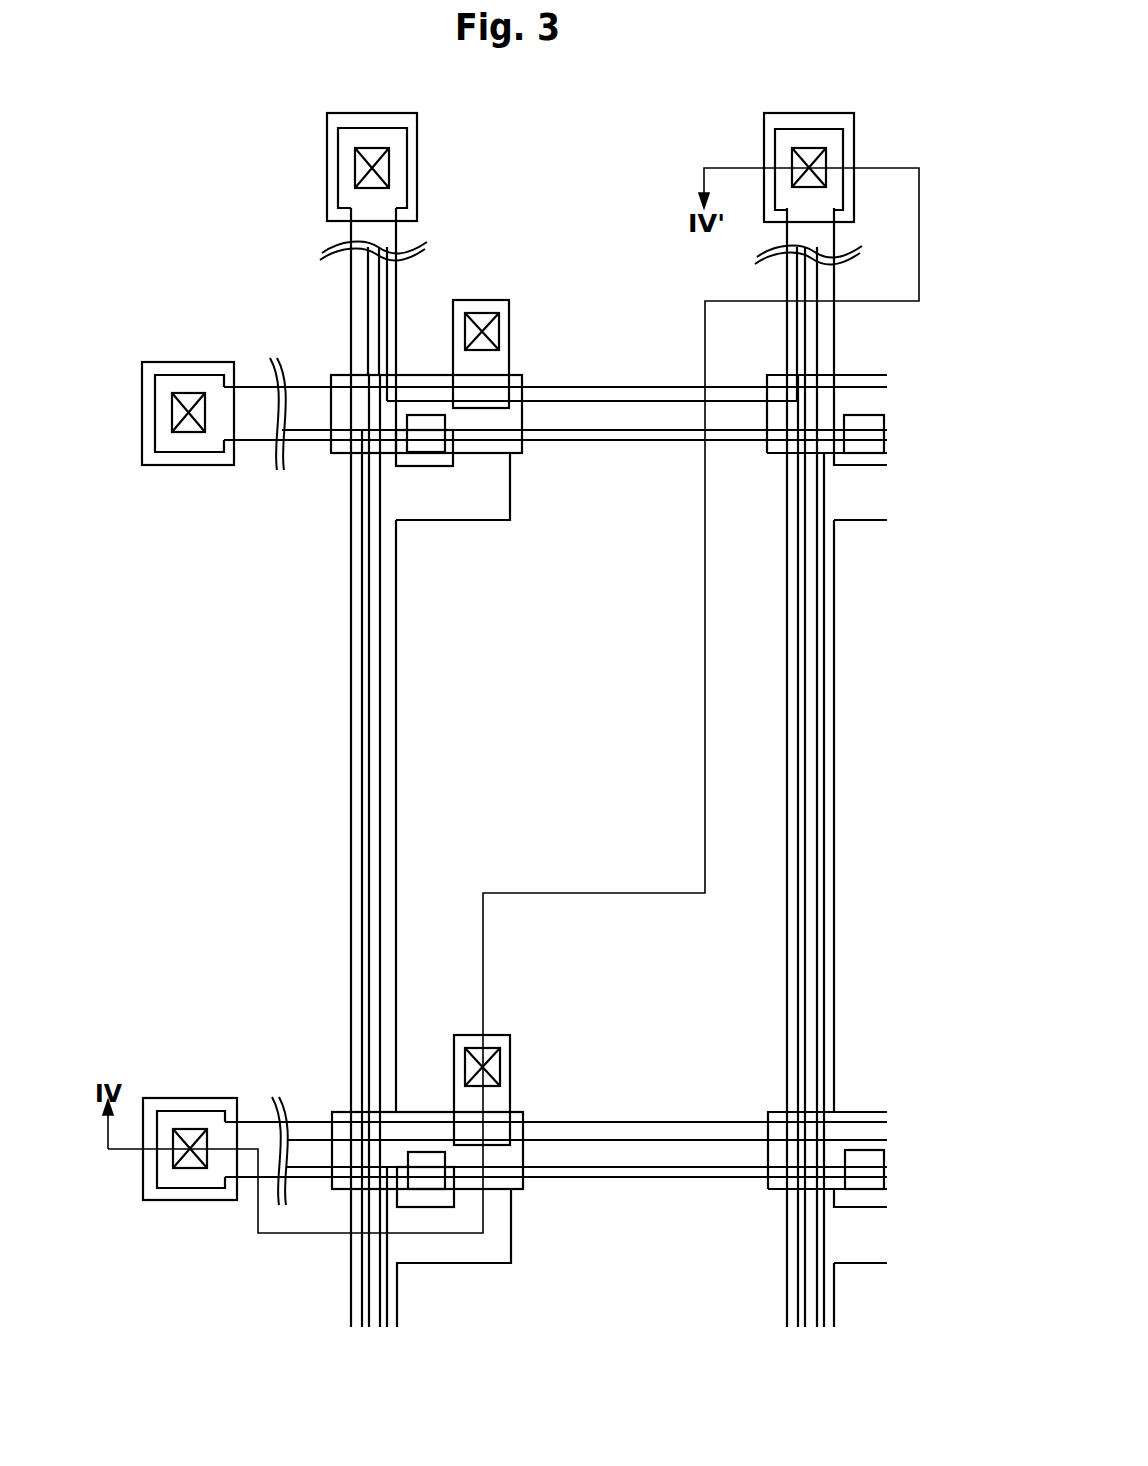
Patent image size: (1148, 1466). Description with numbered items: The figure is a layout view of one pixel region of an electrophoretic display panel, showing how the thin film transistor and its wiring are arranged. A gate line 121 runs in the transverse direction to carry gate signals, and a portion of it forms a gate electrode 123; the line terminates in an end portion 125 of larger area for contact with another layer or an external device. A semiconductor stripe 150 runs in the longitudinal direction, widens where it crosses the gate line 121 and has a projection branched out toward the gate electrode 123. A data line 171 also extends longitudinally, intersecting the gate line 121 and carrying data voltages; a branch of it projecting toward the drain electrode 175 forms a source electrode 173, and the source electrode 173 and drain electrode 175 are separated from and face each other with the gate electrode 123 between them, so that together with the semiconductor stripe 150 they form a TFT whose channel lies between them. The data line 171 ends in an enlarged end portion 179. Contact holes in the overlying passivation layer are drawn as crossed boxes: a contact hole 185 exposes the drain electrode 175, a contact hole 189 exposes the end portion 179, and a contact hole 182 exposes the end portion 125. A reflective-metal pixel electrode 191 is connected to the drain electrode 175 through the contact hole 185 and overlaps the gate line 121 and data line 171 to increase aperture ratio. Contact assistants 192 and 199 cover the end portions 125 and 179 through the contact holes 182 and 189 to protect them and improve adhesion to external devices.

The gate line 121 is at (615, 387).
The gate electrode 123 is at (523, 1175).
The end portion of gate line 125 is at (172, 1189).
The semiconductor stripe 150 is at (446, 1168).
The data line 171 is at (350, 678).
The source electrode 173 is at (466, 1263).
The drain electrode 175 is at (511, 1060).
The end portion of data line 179 is at (832, 129).
The contact hole 182 is at (190, 1129).
The contact hole 185 is at (493, 1048).
The contact hole 189 is at (808, 148).
The pixel electrode 191 is at (653, 1122).
The contact assistant 192 is at (213, 1201).
The contact assistant 199 is at (854, 198).